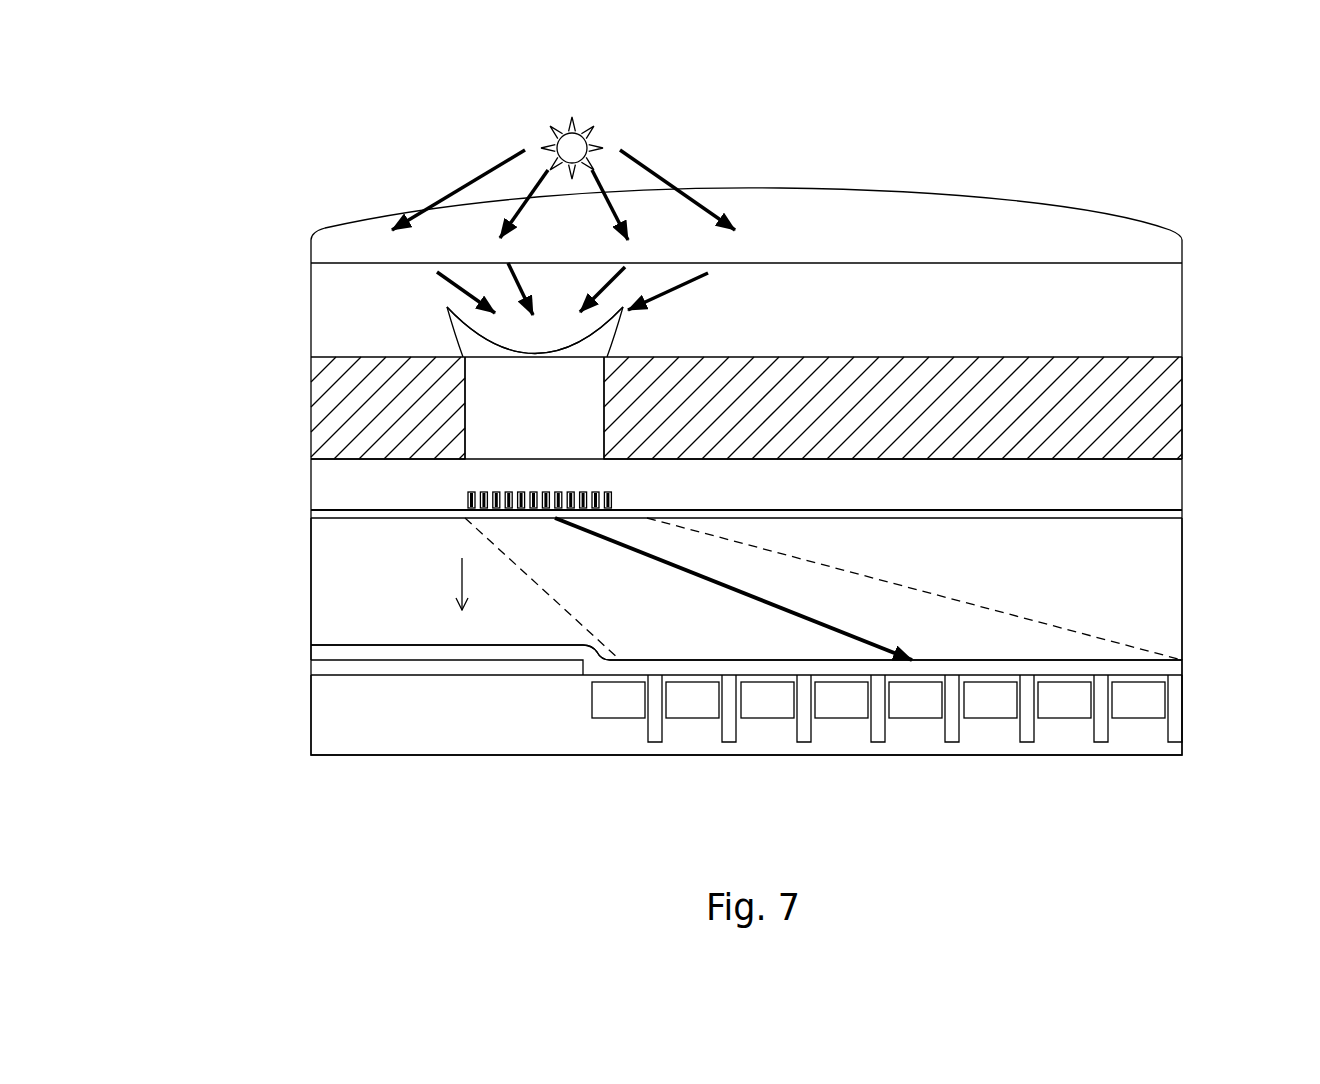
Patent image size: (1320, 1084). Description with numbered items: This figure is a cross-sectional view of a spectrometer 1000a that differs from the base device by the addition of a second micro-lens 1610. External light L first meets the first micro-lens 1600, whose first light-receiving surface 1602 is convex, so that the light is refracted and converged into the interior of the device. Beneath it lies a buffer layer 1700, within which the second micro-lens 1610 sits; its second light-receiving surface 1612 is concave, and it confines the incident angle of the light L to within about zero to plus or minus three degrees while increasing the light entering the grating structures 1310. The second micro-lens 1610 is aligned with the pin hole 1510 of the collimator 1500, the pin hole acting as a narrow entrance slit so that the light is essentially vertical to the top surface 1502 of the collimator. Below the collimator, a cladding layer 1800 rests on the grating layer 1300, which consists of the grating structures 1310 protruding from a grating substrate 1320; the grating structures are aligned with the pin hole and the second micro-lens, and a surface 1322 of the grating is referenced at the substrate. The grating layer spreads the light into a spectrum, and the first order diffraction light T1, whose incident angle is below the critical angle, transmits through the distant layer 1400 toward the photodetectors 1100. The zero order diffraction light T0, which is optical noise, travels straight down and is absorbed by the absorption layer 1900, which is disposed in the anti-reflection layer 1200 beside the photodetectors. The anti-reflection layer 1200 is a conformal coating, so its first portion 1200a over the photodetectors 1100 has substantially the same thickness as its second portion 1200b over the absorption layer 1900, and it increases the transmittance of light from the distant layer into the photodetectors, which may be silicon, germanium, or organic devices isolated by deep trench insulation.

The spectrometer 1000a is at (173, 96).
The photodetectors 1100 is at (1146, 706).
The anti-reflection layer 1200 is at (184, 223).
The first portion of the anti-reflection layer 1200a is at (1180, 665).
The second portion of the anti-reflection layer 1200b is at (311, 647).
The grating layer 1300 is at (184, 132).
The grating structures 1310 is at (618, 492).
The grating substrate 1320 is at (1180, 512).
The surface 1322 is at (960, 509).
The distant layer 1400 is at (1180, 578).
The collimator 1500 is at (1180, 409).
The top surface of the collimator 1502 is at (1052, 357).
The pin hole 1510 is at (535, 424).
The first micro-lens 1600 is at (1180, 252).
The first light-receiving surface 1602 is at (1042, 200).
The second micro-lens 1610 is at (620, 332).
The second light-receiving surface 1612 is at (622, 308).
The buffer layer 1700 is at (1180, 309).
The cladding layer 1800 is at (1180, 478).
The absorption layer 1900 is at (311, 668).
The light L is at (520, 280).
The zero order diffraction light T0 is at (482, 584).
The first order diffraction light T1 is at (733, 589).